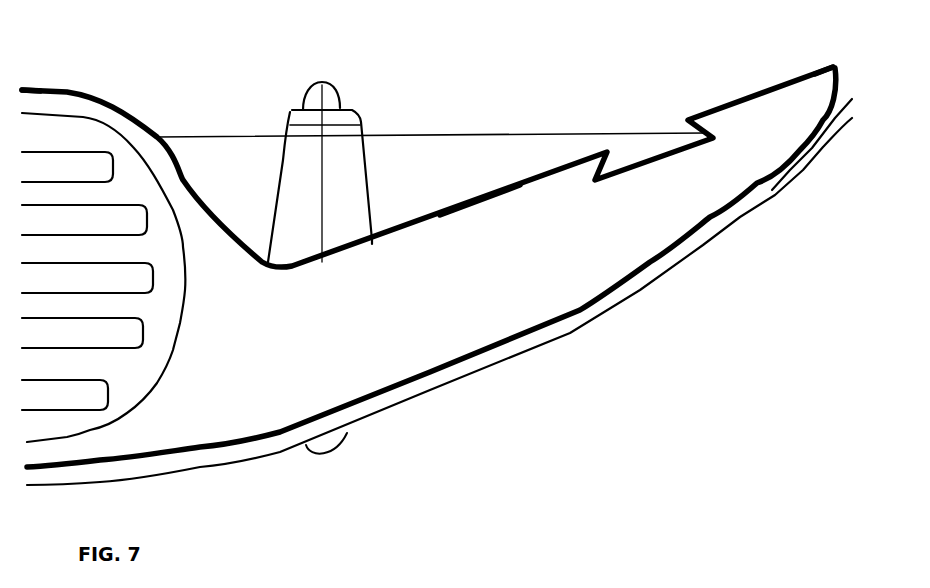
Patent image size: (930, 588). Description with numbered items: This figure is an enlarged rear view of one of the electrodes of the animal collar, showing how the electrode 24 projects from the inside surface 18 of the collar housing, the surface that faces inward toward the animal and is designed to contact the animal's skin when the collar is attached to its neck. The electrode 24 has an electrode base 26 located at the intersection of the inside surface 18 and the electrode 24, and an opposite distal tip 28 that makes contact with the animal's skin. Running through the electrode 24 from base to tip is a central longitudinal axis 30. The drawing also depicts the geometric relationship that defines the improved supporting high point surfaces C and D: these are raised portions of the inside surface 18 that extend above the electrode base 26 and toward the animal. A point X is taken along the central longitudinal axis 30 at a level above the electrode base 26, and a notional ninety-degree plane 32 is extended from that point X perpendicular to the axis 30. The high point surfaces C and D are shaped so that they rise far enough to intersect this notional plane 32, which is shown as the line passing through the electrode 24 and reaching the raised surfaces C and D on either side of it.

The inside surface 18 is at (467, 205).
The electrode 24 is at (352, 116).
The electrode base 26 is at (375, 238).
The distal tip 28 is at (313, 80).
The central longitudinal axis 30 is at (315, 173).
The notional 90-degree plane 32 is at (197, 134).
The high point surface C is at (22, 90).
The high point surface D is at (810, 72).
The point X is at (322, 135).